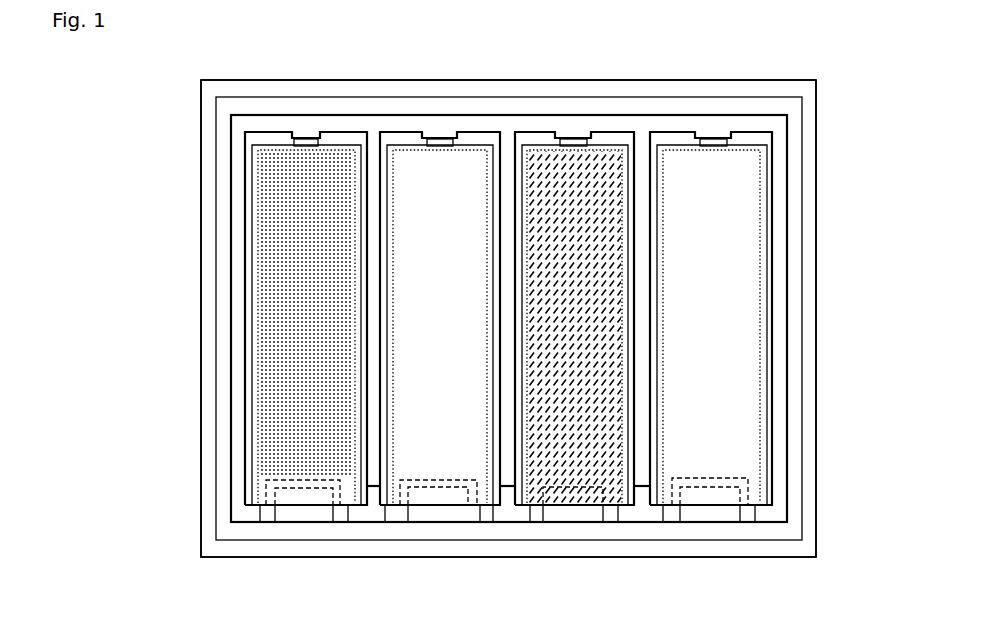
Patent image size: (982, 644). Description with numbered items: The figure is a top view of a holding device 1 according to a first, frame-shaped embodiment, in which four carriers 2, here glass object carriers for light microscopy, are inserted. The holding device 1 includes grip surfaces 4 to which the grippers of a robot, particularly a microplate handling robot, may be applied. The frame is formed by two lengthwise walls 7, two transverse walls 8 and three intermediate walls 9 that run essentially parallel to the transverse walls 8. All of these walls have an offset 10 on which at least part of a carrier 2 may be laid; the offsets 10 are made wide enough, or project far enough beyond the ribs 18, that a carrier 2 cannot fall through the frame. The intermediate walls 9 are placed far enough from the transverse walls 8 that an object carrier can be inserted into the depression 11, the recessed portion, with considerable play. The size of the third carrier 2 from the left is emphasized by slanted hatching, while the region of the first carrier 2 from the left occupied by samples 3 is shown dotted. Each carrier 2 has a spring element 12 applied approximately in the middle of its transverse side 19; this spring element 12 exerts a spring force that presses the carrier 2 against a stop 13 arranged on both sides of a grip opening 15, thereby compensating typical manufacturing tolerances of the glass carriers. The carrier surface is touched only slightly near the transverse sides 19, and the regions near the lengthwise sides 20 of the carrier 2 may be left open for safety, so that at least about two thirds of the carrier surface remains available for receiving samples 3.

The holding device 1 is at (90, 126).
The carrier 2 is at (336, 298).
The samples 3 is at (336, 218).
The grip surfaces 4 is at (184, 69).
The lengthwise walls 7 is at (440, 90).
The transverse walls 8 is at (212, 213).
The intermediate walls 9 is at (373, 462).
The offset 10 is at (402, 147).
The depression 11 is at (483, 355).
The spring element 12 is at (445, 148).
The stop 13 is at (465, 520).
The grip opening 15 is at (311, 497).
The ribs 18 is at (373, 462).
The transverse side 19 is at (538, 128).
The lengthwise sides 20 is at (238, 339).